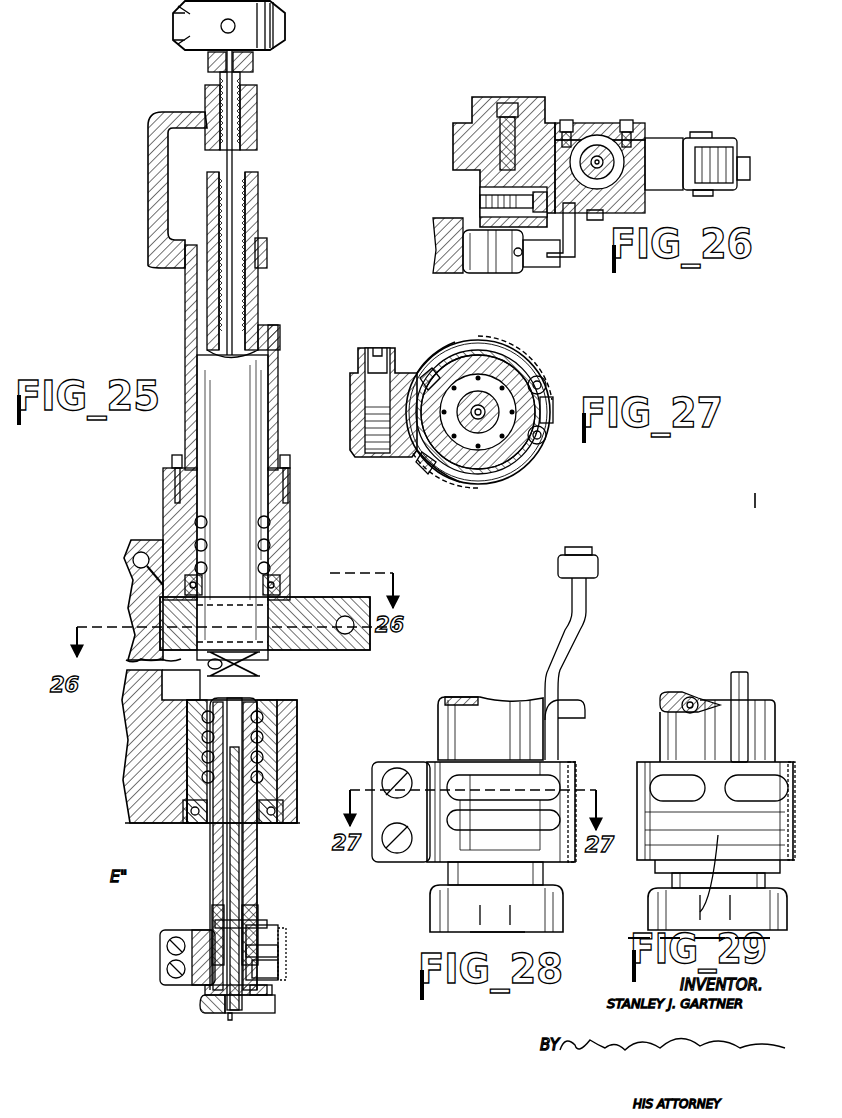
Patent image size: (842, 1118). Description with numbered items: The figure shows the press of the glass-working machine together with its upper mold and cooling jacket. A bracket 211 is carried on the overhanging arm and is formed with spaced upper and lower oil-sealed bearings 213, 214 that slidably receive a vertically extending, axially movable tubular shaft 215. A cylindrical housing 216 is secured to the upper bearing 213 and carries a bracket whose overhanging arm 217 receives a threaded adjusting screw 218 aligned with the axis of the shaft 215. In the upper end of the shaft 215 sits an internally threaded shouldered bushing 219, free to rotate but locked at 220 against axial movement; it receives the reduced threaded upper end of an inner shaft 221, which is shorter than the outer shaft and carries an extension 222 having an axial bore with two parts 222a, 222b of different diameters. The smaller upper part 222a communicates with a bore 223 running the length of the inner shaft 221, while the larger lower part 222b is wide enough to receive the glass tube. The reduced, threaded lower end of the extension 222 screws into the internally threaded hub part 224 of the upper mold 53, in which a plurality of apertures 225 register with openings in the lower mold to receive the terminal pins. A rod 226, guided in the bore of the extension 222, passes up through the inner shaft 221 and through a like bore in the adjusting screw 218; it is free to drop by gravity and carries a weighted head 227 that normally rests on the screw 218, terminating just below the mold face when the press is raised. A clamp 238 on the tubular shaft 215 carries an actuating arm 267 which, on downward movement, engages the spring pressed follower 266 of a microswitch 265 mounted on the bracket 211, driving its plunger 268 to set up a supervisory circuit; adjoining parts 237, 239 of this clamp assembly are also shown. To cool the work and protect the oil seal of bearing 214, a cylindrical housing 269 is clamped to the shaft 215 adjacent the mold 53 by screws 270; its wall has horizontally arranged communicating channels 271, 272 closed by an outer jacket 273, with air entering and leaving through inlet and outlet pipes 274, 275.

In FIG. 25, the bracket 211 is at (133, 560).
In FIG. 26, the bracket 211 is at (455, 152).
In FIG. 25, the upper oil-sealed bearing 213 is at (163, 500).
In FIG. 25, the lower oil-sealed bearing 214 is at (290, 735).
In FIG. 25, the tubular shaft 215 is at (215, 425).
In FIG. 26, the tubular shaft 215 is at (617, 180).
In FIG. 27, the tubular shaft 215 is at (540, 353).
In FIG. 28, the tubular shaft 215 is at (440, 722).
In FIG. 29, the tubular shaft 215 is at (780, 712).
In FIG. 25, the cylindrical housing 216 is at (185, 350).
In FIG. 25, the overhanging arm 217 is at (257, 120).
In FIG. 25, the adjusting screw 218 is at (253, 65).
In FIG. 25, the shouldered bushing 219 is at (258, 230).
In FIG. 25, the lock 220 is at (267, 256).
In FIG. 25, the inner shaft 221 is at (266, 340).
In FIG. 26, the inner shaft 221 is at (620, 150).
In FIG. 25, the extension 222 is at (215, 845).
In FIG. 27, the extension 222 is at (482, 432).
In FIG. 25, the upper bore part 222a is at (226, 856).
In FIG. 25, the lower bore part 222b is at (212, 905).
In FIG. 25, the bore 223 is at (258, 688).
In FIG. 26, the bore 223 is at (630, 124).
In FIG. 25, the hub part 224 is at (205, 990).
In FIG. 27, the hub part 224 is at (475, 452).
In FIG. 28, the hub part 224 is at (448, 880).
In FIG. 29, the hub part 224 is at (672, 880).
In FIG. 25, the apertures 225 is at (205, 1013).
In FIG. 27, the apertures 225 is at (420, 470).
In FIG. 25, the rod 226 is at (233, 1020).
In FIG. 26, the rod 226 is at (560, 118).
In FIG. 27, the rod 226 is at (475, 434).
In FIG. 25, the weighted head 227 is at (286, 30).
In FIG. 26, the bracket block 237 is at (730, 135).
In FIG. 25, the clamp 238 is at (345, 653).
In FIG. 26, the clamp 238 is at (672, 138).
In FIG. 26, the bolt 239 is at (752, 165).
In FIG. 26, the microswitch 265 is at (435, 250).
In FIG. 26, the spring pressed follower 266 is at (552, 267).
In FIG. 26, the actuating arm 267 is at (580, 250).
In FIG. 26, the plunger 268 is at (490, 275).
In FIG. 25, the cylindrical housing 269 is at (268, 925).
In FIG. 27, the cylindrical housing 269 is at (525, 450).
In FIG. 28, the cylindrical housing 269 is at (560, 768).
In FIG. 29, the cylindrical housing 269 is at (650, 768).
In FIG. 25, the screws 270 is at (168, 936).
In FIG. 27, the screws 270 is at (392, 352).
In FIG. 28, the screws 270 is at (420, 750).
In FIG. 25, the channel 271 is at (278, 945).
In FIG. 27, the channel 271 is at (488, 345).
In FIG. 28, the channel 271 is at (500, 755).
In FIG. 29, the channel 271 is at (748, 785).
In FIG. 25, the channel 272 is at (278, 968).
In FIG. 28, the channel 272 is at (490, 840).
In FIG. 29, the channel 272 is at (707, 877).
In FIG. 25, the outer jacket 273 is at (286, 930).
In FIG. 27, the outer jacket 273 is at (480, 330).
In FIG. 28, the outer jacket 273 is at (578, 785).
In FIG. 29, the outer jacket 273 is at (798, 840).
In FIG. 27, the air inlet pipe 274 is at (548, 430).
In FIG. 28, the air inlet pipe 274 is at (578, 700).
In FIG. 29, the air inlet pipe 274 is at (698, 700).
In FIG. 27, the air outlet pipe 275 is at (546, 381).
In FIG. 28, the air outlet pipe 275 is at (580, 640).
In FIG. 29, the air outlet pipe 275 is at (740, 672).
In FIG. 25, the upper mold 53 is at (272, 992).
In FIG. 28, the upper mold 53 is at (440, 918).
In FIG. 29, the upper mold 53 is at (660, 915).